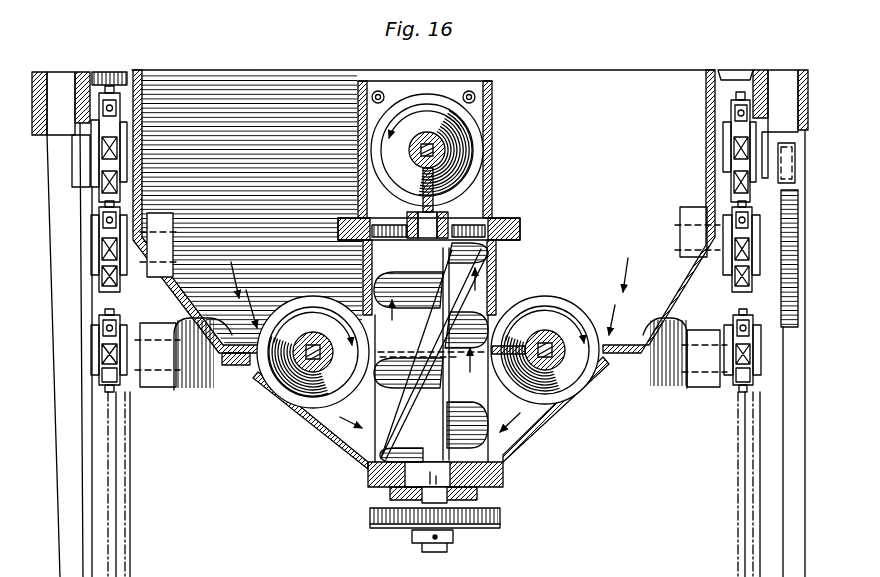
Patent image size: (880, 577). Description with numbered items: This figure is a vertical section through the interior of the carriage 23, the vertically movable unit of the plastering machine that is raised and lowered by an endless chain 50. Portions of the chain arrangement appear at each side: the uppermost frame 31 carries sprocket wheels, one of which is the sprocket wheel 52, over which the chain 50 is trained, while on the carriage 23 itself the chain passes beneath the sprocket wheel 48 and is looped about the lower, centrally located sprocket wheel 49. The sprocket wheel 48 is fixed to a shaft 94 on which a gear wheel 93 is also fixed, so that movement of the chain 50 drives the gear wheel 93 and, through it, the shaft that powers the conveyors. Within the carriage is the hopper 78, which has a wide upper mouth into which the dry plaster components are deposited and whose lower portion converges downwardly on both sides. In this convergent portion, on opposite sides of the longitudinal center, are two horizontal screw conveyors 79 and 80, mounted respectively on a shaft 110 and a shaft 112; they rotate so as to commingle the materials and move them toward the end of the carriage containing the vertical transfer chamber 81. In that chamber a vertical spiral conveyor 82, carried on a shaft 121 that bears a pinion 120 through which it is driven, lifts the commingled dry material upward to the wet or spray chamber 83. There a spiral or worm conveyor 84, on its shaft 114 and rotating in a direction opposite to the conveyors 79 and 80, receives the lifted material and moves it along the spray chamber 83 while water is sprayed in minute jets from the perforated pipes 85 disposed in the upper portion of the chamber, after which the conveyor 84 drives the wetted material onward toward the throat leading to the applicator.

The uppermost frame 31 is at (70, 70).
The sprocket wheel 52 is at (114, 104).
The carriage 23 is at (232, 76).
The perforated pipes 85 is at (463, 91).
The hopper 78 is at (605, 78).
The wet or spray chamber 83 is at (480, 117).
The shaft 114 is at (432, 155).
The spiral or worm conveyor 84 is at (468, 174).
The gear wheel 93 is at (793, 186).
The shaft 94 is at (800, 265).
The vertical transfer chamber 81 is at (483, 270).
The vertical spiral conveyor 82 is at (484, 312).
The horizontal screw conveyor 80 is at (552, 298).
The shaft 112 is at (549, 340).
The sprocket wheel 48 is at (110, 282).
The horizontal screw conveyor 79 is at (300, 365).
The shaft 110 is at (310, 370).
The sprocket wheel 49 is at (118, 388).
The chain 50 is at (125, 559).
The pinion 120 is at (498, 525).
The shaft 121 is at (446, 548).